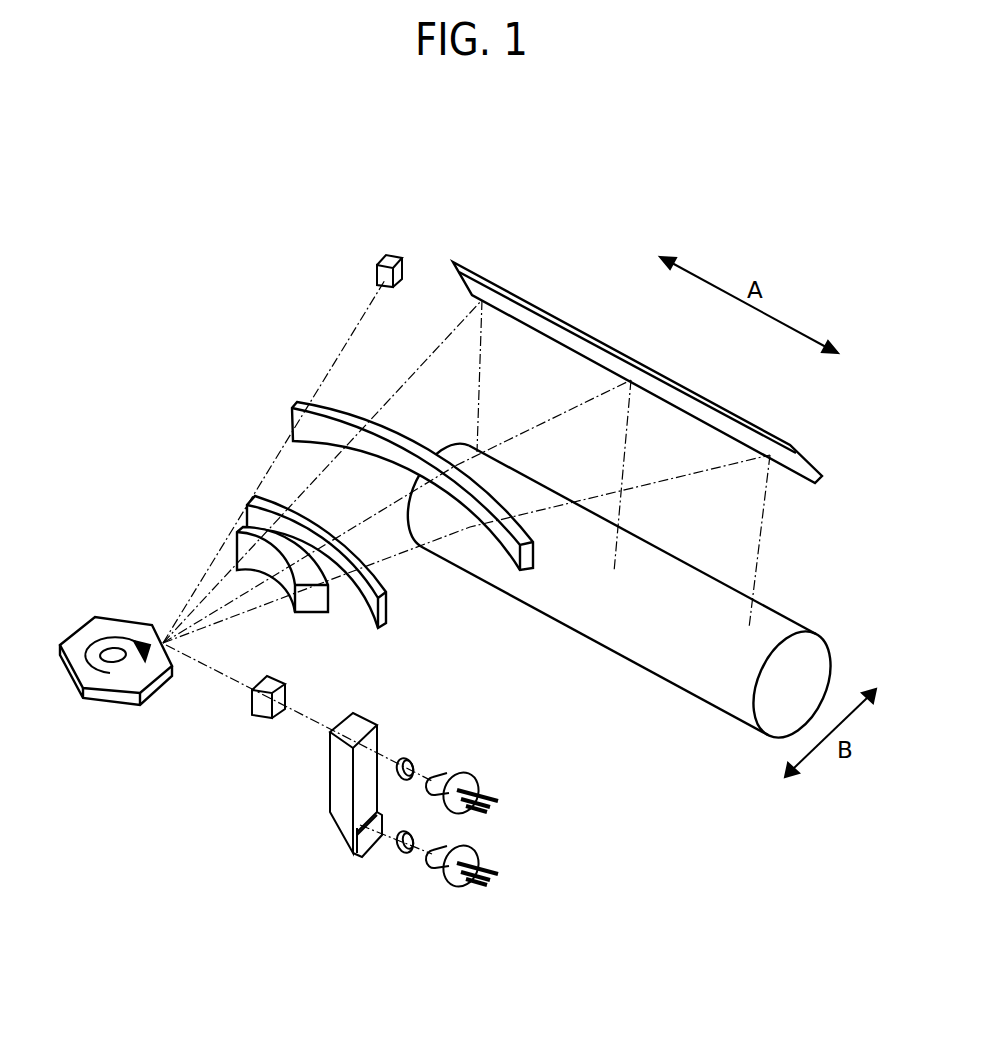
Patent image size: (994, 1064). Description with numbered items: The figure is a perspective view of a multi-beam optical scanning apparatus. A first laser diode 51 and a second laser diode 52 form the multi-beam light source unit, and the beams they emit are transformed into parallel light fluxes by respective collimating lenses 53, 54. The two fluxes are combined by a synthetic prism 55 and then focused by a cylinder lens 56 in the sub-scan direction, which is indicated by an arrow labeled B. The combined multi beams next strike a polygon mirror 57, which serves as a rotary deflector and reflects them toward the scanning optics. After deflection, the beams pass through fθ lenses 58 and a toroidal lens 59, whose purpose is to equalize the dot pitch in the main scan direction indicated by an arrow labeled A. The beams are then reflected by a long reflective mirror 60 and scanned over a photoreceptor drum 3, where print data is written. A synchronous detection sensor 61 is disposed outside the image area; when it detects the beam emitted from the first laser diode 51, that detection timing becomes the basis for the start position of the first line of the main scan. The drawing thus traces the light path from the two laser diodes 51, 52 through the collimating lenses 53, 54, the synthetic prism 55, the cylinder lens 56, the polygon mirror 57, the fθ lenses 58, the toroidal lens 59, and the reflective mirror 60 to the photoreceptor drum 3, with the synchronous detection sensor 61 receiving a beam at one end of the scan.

The photoreceptor drum 3 is at (783, 611).
The first laser diode 51 is at (468, 776).
The second laser diode 52 is at (473, 855).
The collimating lens 53 is at (411, 758).
The collimating lens 54 is at (403, 853).
The synthetic prism 55 is at (333, 768).
The cylinder lens 56 is at (252, 704).
The polygon mirror 57 is at (123, 622).
The fθ lenses 58 is at (215, 558).
The toroidal lens 59 is at (292, 423).
The reflective mirror 60 is at (632, 353).
The synchronous detection sensor 61 is at (377, 272).